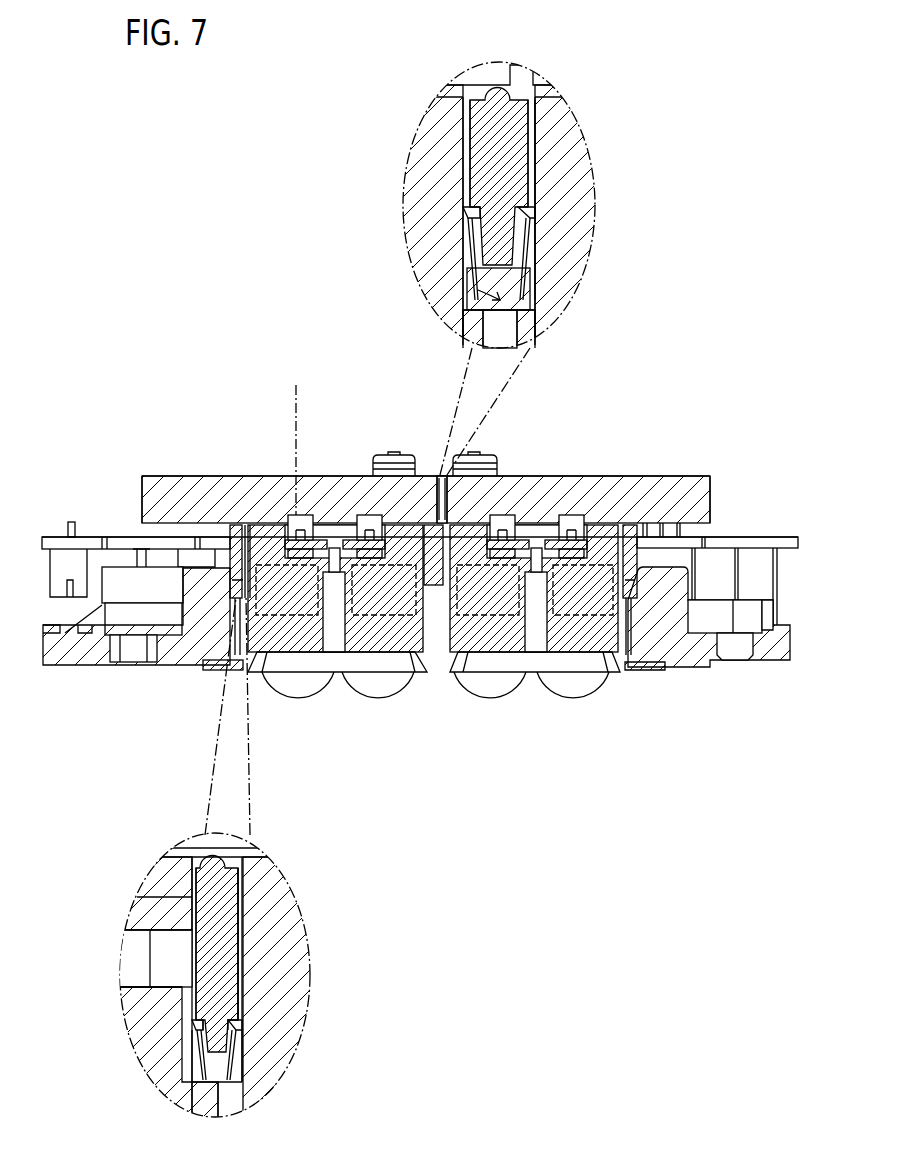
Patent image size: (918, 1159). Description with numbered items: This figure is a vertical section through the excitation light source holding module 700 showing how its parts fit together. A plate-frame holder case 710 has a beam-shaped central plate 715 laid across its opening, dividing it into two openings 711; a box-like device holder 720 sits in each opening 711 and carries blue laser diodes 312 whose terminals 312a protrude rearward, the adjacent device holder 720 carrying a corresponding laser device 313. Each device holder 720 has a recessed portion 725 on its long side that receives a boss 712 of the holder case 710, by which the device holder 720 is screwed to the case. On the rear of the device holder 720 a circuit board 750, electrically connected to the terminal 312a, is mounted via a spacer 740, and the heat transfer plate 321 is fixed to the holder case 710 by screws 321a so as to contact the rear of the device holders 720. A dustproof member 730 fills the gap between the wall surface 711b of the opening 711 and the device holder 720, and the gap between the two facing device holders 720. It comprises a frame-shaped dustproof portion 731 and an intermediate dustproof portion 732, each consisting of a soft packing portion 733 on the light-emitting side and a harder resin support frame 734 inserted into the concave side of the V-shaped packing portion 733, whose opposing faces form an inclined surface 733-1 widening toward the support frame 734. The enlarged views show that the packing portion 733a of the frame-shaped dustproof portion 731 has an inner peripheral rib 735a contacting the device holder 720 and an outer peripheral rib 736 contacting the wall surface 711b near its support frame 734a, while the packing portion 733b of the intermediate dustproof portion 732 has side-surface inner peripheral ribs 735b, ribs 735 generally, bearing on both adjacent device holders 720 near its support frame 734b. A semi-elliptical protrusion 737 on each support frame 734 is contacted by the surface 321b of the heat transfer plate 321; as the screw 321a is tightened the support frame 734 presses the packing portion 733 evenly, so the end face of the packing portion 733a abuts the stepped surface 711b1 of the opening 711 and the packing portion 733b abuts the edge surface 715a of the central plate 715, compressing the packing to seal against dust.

The excitation light source holding module 700 is at (752, 725).
The holder case 710 is at (677, 662).
The opening 711 is at (243, 600).
The wall surface 711b is at (195, 985).
The stepped surface 711b1 is at (190, 1086).
The boss 712 is at (435, 741).
The central plate 715 is at (432, 600).
The edge surface 715a is at (463, 288).
The device holder 720 is at (250, 477).
The recessed portion 725 is at (365, 698).
The dustproof member 730 is at (678, 520).
The frame-shaped dustproof portion 731 is at (180, 878).
The intermediate dustproof portion 732 is at (537, 187).
The packing portion 733 is at (472, 712).
The packing portion 733a is at (243, 1075).
The packing portion 733b is at (515, 283).
The inclined surface 733-1 is at (467, 243).
The support frame 734 is at (464, 539).
The support frame 734a is at (227, 913).
The support frame 734b is at (517, 113).
The inner peripheral rib 735 is at (479, 603).
The inner peripheral rib 735a is at (240, 1023).
The inner peripheral rib 735b is at (460, 210).
The outer peripheral rib 736 is at (182, 1021).
The protrusion 737 is at (500, 95).
The spacer 740 is at (290, 540).
The circuit board 750 is at (303, 520).
The blue laser diode 312 is at (397, 560).
The terminal 312a is at (296, 443).
The right module 313 is at (480, 600).
The heat transfer plate 321 is at (184, 476).
The screw 321a is at (387, 453).
The surface 321b is at (142, 530).